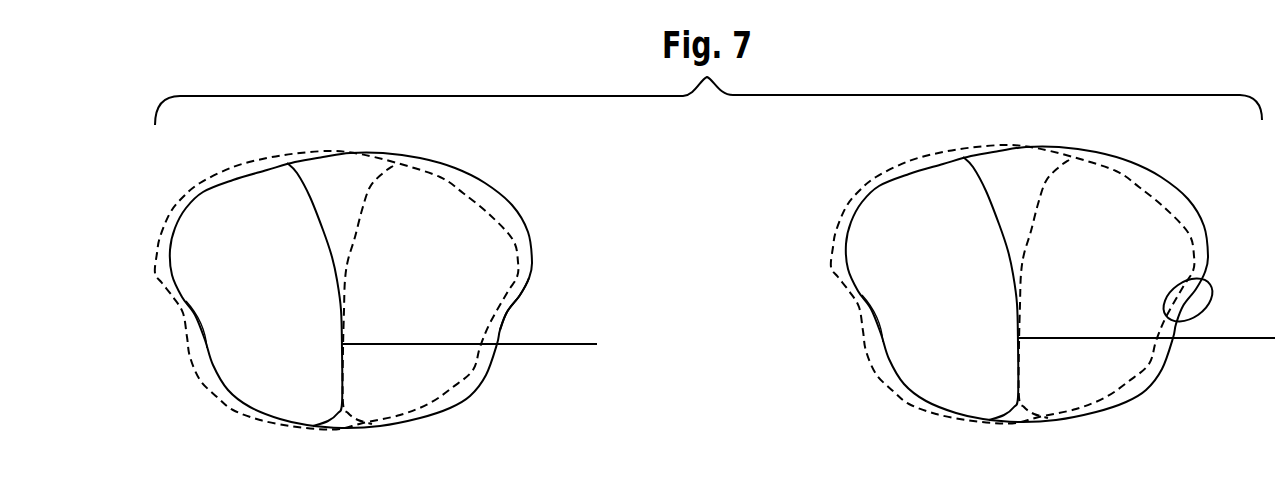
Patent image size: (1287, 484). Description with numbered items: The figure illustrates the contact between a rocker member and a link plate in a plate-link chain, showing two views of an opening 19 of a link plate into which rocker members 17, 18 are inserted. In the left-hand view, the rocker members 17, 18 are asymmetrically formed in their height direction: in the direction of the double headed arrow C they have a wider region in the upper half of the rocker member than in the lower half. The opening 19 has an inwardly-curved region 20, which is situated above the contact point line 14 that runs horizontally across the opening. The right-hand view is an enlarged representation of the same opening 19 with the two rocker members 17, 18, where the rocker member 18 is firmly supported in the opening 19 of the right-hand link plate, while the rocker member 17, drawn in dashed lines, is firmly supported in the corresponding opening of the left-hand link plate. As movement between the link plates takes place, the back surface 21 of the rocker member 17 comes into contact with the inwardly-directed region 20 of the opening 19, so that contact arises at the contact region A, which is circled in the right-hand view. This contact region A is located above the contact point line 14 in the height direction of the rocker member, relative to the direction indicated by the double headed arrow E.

The contact point line 14 is at (573, 345).
The rocker member 17 is at (437, 388).
The rocker member 18 is at (235, 210).
The opening 19 is at (523, 218).
The inwardly-curved region 20 is at (503, 320).
The back surface 21 is at (518, 262).
The contact region A is at (1213, 277).
The double headed arrow C is at (470, 262).
The double headed arrow E is at (729, 218).